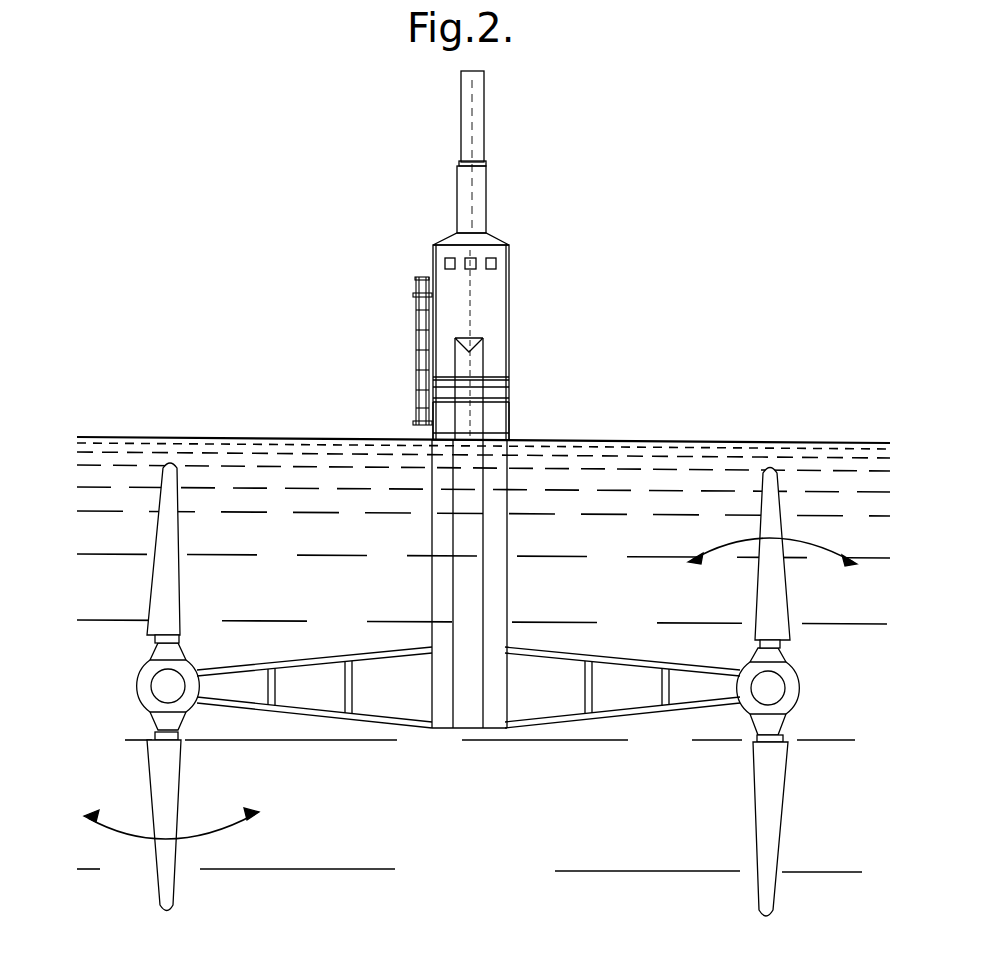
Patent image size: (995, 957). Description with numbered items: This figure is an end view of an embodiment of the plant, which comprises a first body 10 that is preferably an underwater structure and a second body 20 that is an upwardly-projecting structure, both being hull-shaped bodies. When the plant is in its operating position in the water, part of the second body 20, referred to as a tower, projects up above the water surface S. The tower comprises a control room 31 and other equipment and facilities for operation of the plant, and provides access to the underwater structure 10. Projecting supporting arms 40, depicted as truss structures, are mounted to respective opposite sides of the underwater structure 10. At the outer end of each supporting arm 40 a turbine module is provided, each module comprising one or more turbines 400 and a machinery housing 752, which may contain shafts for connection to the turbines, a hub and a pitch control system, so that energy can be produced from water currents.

The first body 10 is at (440, 748).
The second body 20 is at (510, 413).
The control room 31 is at (510, 266).
The supporting arms 40 is at (315, 712).
The turbines 400 is at (778, 577).
The machinery housing 752 is at (188, 705).
The water surface S is at (655, 443).